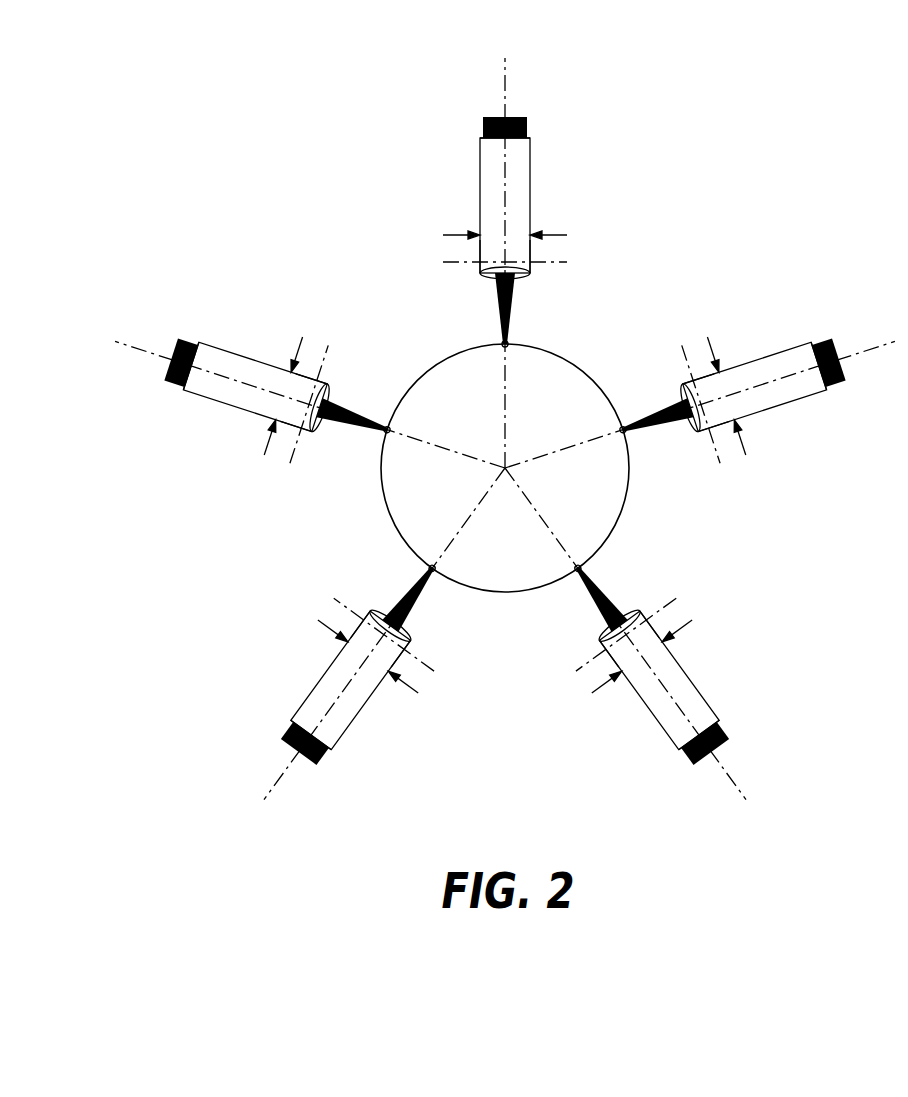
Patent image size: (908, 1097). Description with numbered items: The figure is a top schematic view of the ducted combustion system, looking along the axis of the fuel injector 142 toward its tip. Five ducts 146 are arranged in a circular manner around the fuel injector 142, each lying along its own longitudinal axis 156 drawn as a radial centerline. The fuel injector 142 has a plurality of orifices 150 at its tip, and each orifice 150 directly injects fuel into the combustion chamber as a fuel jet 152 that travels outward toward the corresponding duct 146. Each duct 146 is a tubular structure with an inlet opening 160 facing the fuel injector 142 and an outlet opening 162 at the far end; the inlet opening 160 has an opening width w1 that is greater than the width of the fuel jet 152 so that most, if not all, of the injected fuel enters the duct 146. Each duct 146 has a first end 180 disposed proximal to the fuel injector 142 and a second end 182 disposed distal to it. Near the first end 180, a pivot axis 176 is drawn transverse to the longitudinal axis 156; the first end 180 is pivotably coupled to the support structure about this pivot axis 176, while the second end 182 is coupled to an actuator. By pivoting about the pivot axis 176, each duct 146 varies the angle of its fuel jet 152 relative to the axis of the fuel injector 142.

The fuel injector 142 is at (530, 345).
The duct 146 is at (530, 200).
The orifice 150 is at (492, 343).
The fuel jet 152 is at (500, 310).
The longitudinal axis of duct 156 is at (505, 70).
The inlet opening 160 is at (480, 276).
The outlet opening 162 is at (483, 130).
The pivot axis 176 is at (563, 262).
The first end 180 is at (480, 262).
The second end 182 is at (480, 145).
The opening width w1 is at (512, 467).